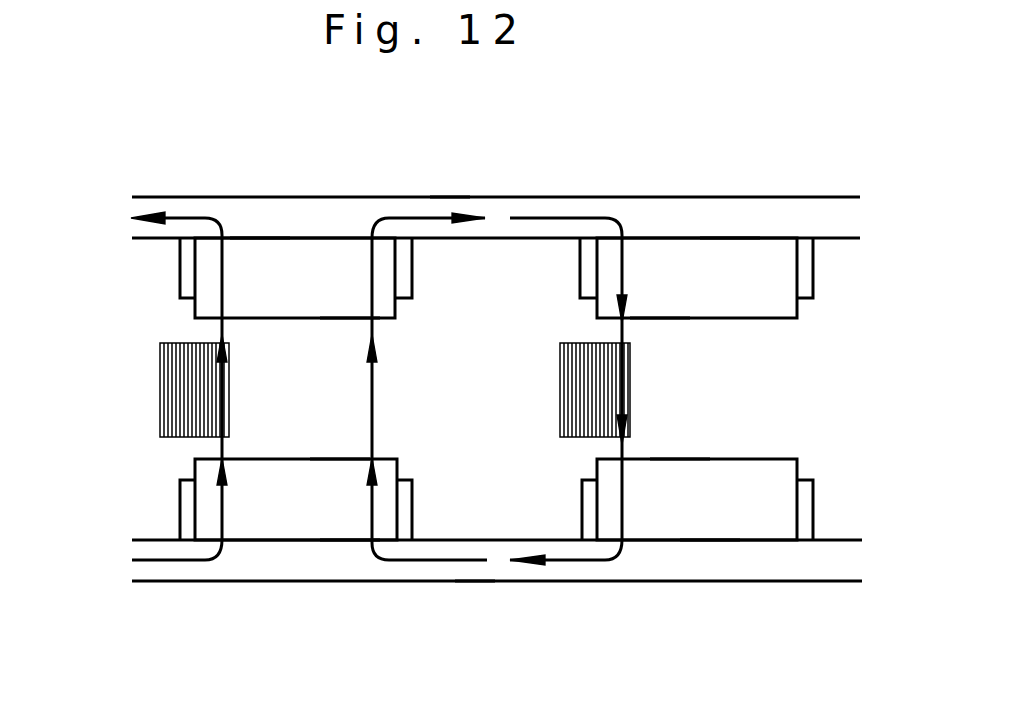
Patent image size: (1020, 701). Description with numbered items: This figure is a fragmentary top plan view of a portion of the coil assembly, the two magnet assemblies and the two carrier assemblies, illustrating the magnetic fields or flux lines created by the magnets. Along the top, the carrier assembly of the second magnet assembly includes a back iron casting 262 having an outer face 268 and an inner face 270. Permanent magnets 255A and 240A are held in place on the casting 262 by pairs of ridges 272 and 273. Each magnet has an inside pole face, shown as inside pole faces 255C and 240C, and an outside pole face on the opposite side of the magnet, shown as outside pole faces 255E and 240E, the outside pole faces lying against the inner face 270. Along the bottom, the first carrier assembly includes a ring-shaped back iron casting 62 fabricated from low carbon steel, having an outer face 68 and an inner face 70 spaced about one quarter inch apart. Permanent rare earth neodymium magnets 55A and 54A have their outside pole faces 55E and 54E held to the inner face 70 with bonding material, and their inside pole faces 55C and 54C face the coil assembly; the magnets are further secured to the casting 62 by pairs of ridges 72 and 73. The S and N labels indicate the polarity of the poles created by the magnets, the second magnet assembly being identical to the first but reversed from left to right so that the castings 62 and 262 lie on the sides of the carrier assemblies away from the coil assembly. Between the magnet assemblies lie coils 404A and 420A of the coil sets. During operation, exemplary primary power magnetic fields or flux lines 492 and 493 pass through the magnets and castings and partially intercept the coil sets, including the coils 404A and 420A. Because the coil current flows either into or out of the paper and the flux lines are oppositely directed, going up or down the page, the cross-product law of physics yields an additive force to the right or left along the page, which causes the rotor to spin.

The outer face 268 is at (155, 197).
The back iron casting 262 is at (451, 165).
The outside pole face 255E is at (258, 238).
The permanent magnet 255A is at (283, 238).
The inside pole face 255C is at (348, 318).
The outside pole face 240E is at (724, 238).
The permanent magnet 240A is at (748, 238).
The inside pole face 240C is at (660, 318).
The inner face 270 is at (152, 240).
The ridge 273 is at (178, 291).
The ridge 272 is at (413, 282).
The coil 404A is at (158, 395).
The coil 420A is at (560, 395).
The inside pole face 55C is at (340, 459).
The outside pole face 55E is at (348, 540).
The permanent magnet 55A is at (357, 540).
The inside pole face 54C is at (678, 459).
The outside pole face 54E is at (710, 540).
The permanent magnet 54A is at (768, 540).
The ridge 73 is at (178, 488).
The ridge 72 is at (413, 494).
The inner face 70 is at (152, 540).
The outer face 68 is at (140, 581).
The magnetic flux line 493 is at (165, 565).
The magnetic flux line 492 is at (593, 560).
The back iron casting 62 is at (473, 612).